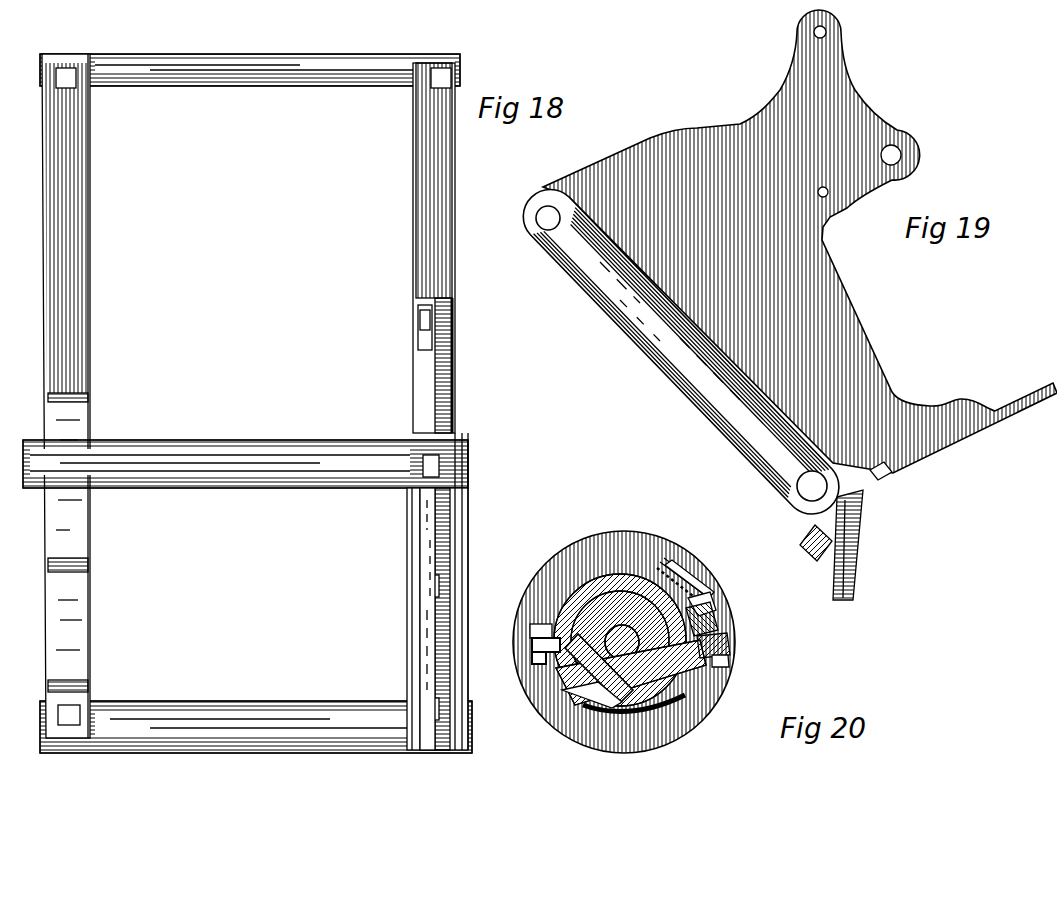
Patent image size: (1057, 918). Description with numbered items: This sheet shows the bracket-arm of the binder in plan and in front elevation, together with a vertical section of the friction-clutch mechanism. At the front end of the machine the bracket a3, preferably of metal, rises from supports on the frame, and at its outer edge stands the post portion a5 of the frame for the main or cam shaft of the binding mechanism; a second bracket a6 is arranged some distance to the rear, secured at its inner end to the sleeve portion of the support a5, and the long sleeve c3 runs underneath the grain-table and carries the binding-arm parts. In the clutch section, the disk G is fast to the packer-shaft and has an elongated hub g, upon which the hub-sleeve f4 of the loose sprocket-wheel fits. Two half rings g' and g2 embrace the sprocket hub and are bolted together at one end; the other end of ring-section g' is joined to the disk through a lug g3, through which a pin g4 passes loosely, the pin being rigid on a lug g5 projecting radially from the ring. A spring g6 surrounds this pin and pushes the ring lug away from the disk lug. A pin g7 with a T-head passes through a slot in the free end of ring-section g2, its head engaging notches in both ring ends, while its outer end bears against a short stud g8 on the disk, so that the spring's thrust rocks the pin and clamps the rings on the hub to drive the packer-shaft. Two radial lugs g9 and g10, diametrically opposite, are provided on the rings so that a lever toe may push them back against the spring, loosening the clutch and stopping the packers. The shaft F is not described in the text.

In FIG. 18, the bracket a3 is at (445, 406).
In FIG. 19, the bracket a3 is at (843, 318).
In FIG. 18, the post portion a5 is at (412, 627).
In FIG. 19, the post portion a5 is at (668, 372).
In FIG. 18, the second bracket a6 is at (72, 600).
In FIG. 18, the sleeve c3 is at (228, 455).
In FIG. 19, the sleeve c3 is at (785, 502).
In FIG. 20, the disk G is at (607, 542).
In FIG. 20, the hub-sleeve f4 is at (618, 590).
In FIG. 20, the shaft F is at (613, 712).
In FIG. 20, the hub g is at (638, 694).
In FIG. 20, the ring-section g' is at (530, 616).
In FIG. 20, the ring-section g2 is at (617, 697).
In FIG. 20, the lug g3 is at (672, 564).
In FIG. 20, the pin g4 is at (668, 572).
In FIG. 20, the lug g5 is at (697, 597).
In FIG. 20, the spring g6 is at (680, 578).
In FIG. 20, the pin g7 is at (716, 652).
In FIG. 20, the stud g8 is at (714, 662).
In FIG. 20, the radial lug g9 is at (570, 703).
In FIG. 20, the radial lug g10 is at (702, 612).